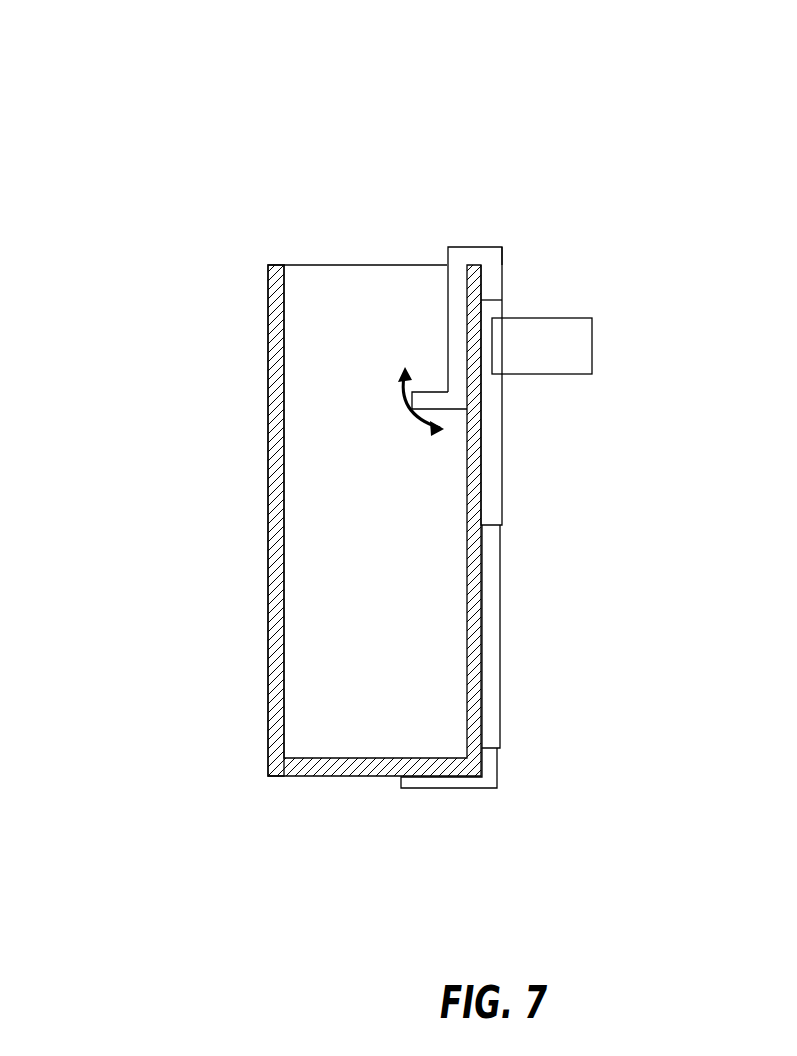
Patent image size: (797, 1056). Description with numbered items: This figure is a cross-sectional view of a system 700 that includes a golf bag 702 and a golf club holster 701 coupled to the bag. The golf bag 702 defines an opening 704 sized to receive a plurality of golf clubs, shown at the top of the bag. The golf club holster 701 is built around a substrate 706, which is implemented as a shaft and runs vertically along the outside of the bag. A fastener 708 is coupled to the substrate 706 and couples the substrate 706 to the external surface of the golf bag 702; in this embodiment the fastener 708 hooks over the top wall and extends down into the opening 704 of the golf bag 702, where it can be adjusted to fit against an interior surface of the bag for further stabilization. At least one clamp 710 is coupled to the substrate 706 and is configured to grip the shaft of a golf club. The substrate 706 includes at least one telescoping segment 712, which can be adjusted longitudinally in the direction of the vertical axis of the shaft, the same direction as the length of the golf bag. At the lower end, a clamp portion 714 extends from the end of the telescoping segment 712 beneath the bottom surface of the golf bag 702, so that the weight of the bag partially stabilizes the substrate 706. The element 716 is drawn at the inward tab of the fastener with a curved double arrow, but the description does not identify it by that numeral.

The system 700 is at (108, 86).
The golf club holster 701 is at (510, 302).
The golf bag 702 is at (268, 428).
The opening 704 is at (301, 243).
The substrate 706 is at (503, 263).
The fastener 708 is at (447, 252).
The clamp 710 is at (592, 342).
The telescoping segment 712 is at (500, 587).
The clamp portion 714 is at (497, 767).
The retaining tab 716 is at (412, 392).